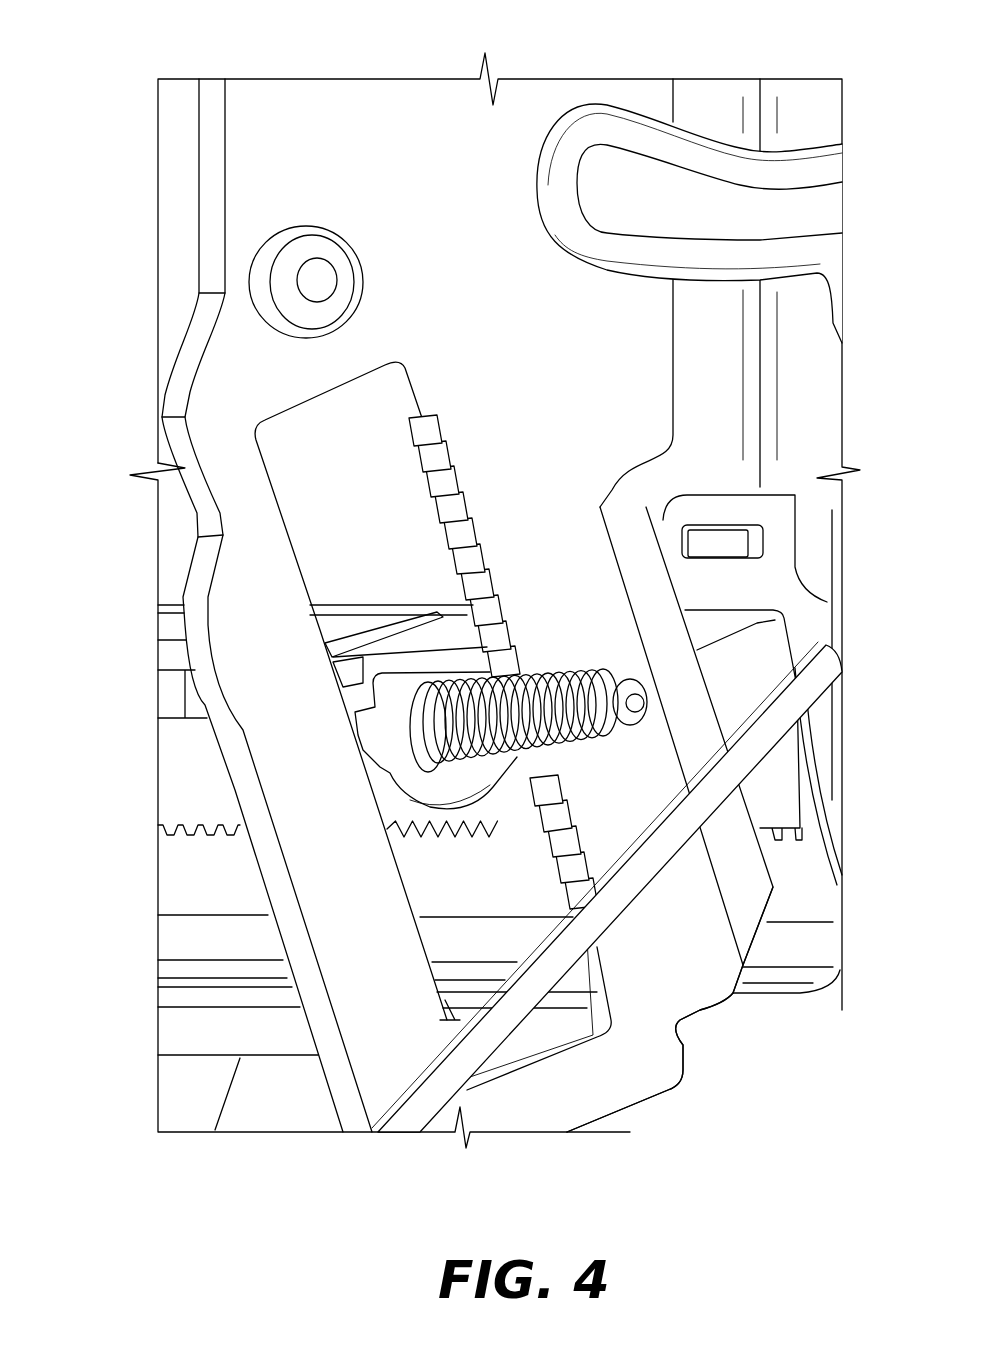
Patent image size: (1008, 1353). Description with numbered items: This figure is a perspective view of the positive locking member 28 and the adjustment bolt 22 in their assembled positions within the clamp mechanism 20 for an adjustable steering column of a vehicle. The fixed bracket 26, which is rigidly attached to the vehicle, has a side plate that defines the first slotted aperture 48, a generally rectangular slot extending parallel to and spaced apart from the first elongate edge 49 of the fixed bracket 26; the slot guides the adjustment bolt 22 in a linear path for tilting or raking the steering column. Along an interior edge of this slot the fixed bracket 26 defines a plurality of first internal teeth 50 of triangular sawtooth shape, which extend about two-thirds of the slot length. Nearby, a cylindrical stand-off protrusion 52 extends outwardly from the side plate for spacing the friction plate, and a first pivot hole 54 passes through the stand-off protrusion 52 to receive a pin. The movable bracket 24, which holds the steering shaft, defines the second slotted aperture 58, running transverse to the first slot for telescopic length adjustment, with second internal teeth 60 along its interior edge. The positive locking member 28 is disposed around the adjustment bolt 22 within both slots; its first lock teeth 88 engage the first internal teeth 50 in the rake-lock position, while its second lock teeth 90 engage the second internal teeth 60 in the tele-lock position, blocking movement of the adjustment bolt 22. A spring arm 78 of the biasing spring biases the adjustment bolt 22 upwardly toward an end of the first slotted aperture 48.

The clamp mechanism 20 is at (118, 72).
The adjustment bolt 22 is at (177, 762).
The movable bracket 24 is at (186, 541).
The fixed bracket 26 is at (442, 112).
The positive locking member 28 is at (426, 655).
The first slotted aperture 48 is at (351, 410).
The first elongate edge 49 is at (277, 495).
The first internal teeth 50 is at (432, 440).
The stand-off protrusion 52 is at (318, 246).
The first pivot hole 54 is at (324, 277).
The second slotted aperture 58 is at (172, 617).
The second internal teeth 60 is at (200, 825).
The spring arm 78 is at (637, 870).
The first lock teeth 88 is at (548, 773).
The second lock teeth 90 is at (471, 839).